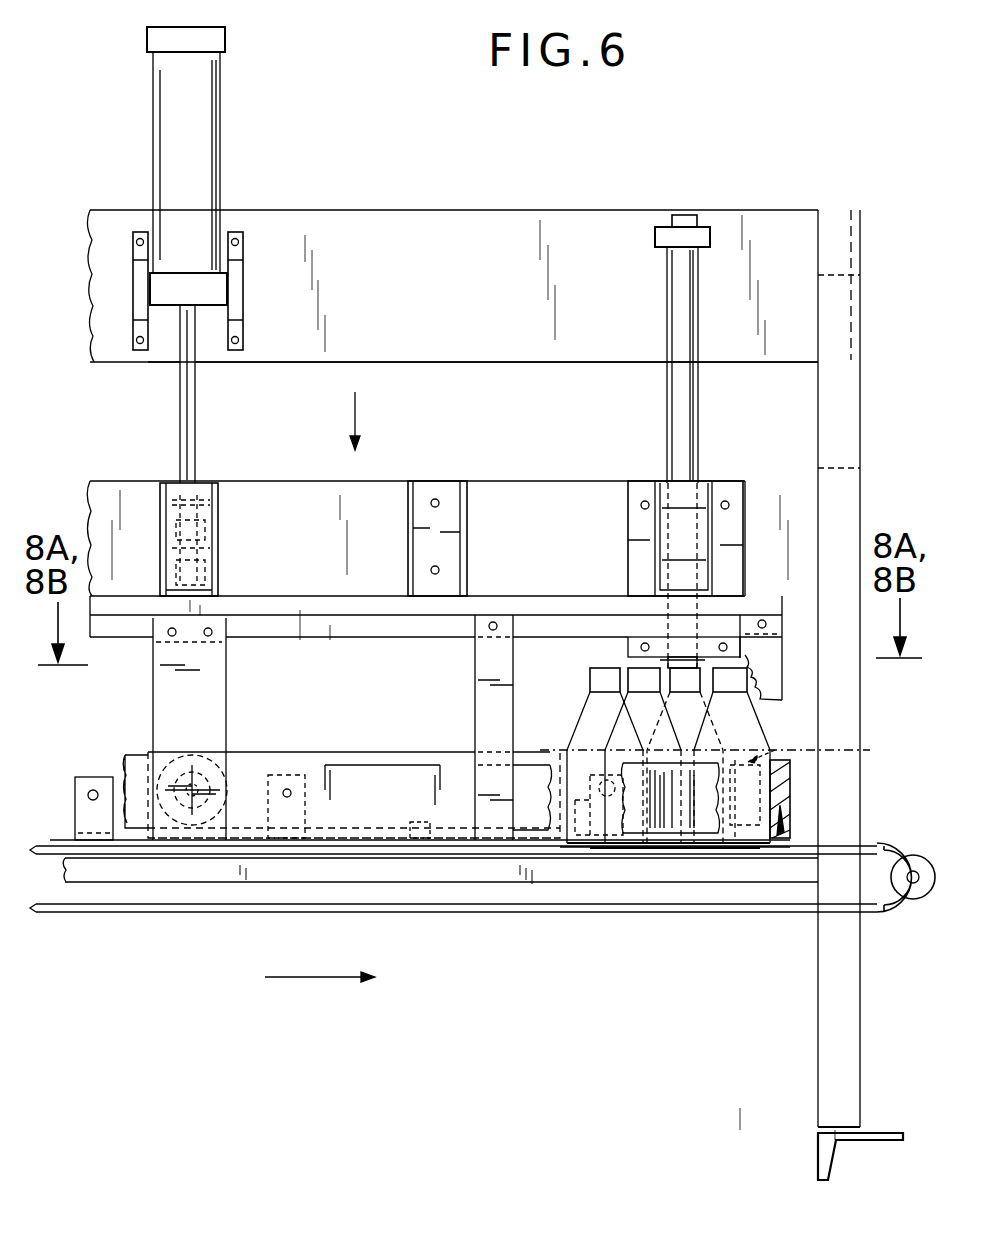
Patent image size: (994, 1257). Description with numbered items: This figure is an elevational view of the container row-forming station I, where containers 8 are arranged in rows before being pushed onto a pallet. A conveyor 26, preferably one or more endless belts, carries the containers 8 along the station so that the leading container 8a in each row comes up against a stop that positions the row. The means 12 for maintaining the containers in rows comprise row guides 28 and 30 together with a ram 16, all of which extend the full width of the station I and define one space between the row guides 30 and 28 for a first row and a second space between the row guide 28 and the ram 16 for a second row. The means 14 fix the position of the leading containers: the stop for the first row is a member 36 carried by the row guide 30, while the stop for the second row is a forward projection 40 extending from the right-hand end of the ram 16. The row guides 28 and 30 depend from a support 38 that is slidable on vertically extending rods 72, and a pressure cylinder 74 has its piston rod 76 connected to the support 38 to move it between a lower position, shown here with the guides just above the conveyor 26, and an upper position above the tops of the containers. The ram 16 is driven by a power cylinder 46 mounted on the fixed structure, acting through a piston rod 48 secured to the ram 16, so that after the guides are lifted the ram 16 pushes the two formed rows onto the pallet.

The pressure cylinder 74 is at (208, 104).
The piston rod 76 is at (193, 422).
The vertically extending rods 72 is at (696, 446).
The support 38 is at (562, 502).
The power cylinder 46 is at (238, 758).
The piston rod 48 is at (187, 782).
The means for maintaining the containers in a row 12 is at (322, 750).
The ram 16 is at (382, 762).
The row guide 28 is at (530, 786).
The containers 8 is at (595, 720).
The end container 8a is at (760, 815).
The means for fixing the position of the leading containers 14 is at (777, 930).
The member 36 is at (837, 799).
The row guide 30 is at (708, 840).
The forward projection 40 is at (735, 840).
The conveyor 26 is at (430, 908).
The container row-forming station I is at (578, 865).